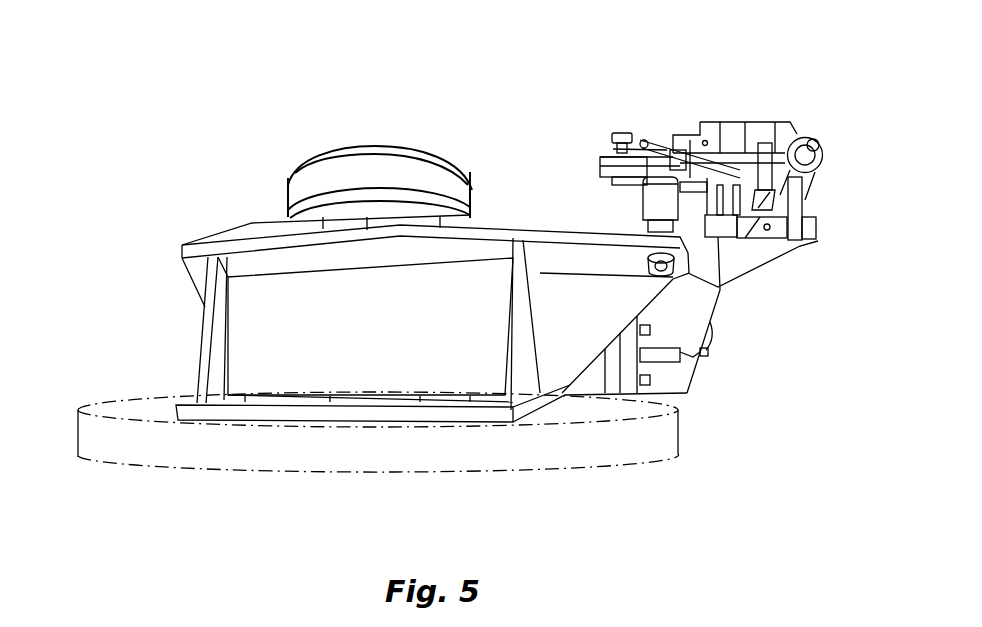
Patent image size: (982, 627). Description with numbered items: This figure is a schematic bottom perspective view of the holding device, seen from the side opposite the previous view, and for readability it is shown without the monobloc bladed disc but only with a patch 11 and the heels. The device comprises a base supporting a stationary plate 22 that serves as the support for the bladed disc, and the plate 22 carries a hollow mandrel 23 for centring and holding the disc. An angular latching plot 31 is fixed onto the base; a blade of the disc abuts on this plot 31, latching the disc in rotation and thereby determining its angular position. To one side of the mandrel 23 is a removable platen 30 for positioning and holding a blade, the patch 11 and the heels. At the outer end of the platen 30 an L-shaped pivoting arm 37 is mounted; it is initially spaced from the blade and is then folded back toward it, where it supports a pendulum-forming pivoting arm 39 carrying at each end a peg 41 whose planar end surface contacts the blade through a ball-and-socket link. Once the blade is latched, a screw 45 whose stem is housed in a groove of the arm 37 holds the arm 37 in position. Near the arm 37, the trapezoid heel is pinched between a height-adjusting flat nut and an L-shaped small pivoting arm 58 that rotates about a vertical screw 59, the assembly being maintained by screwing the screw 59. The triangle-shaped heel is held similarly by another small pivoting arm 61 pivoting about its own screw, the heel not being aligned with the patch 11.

The patch 11 is at (670, 155).
The plate 22 is at (267, 227).
The mandrel 23 is at (376, 177).
The platen 30 is at (765, 278).
The angular latching plot 31 is at (653, 206).
The pivoting arm 37 is at (730, 130).
The pendulum-forming pivoting arm 39 is at (684, 137).
The peg 41 is at (683, 143).
The screw 45 is at (800, 137).
The small pivoting arm 58 is at (805, 202).
The vertical screw 59 is at (773, 140).
The small pivoting arm 61 is at (610, 148).